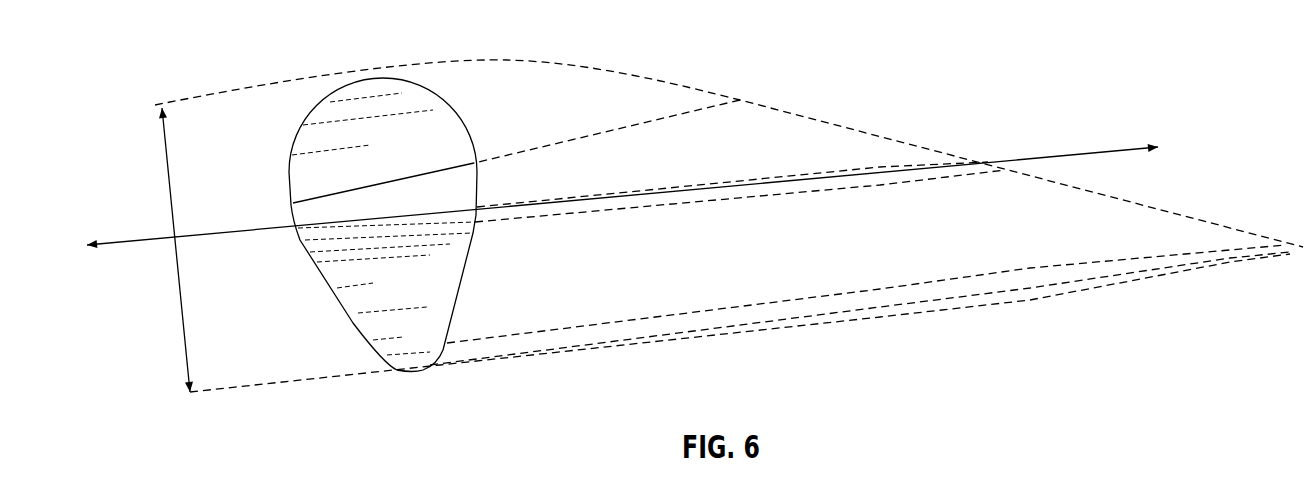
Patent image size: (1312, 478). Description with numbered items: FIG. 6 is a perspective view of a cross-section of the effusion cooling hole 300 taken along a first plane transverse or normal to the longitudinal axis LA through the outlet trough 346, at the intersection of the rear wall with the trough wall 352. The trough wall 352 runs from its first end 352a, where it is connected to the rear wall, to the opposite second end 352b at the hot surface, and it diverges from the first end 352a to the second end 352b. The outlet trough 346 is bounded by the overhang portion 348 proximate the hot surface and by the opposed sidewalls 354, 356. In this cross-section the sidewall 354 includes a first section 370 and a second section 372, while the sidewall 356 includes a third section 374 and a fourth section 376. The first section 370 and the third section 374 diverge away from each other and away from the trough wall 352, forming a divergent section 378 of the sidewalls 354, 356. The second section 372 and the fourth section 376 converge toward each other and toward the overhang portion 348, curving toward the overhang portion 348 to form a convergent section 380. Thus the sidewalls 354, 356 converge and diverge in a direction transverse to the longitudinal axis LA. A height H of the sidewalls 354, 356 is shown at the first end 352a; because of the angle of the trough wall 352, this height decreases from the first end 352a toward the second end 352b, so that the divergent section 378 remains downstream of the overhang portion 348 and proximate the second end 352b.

The effusion cooling hole 300 is at (750, 36).
The outlet trough 346 is at (548, 48).
The overhang portion 348 is at (477, 80).
The trough wall 352 is at (1064, 333).
The first end 352a is at (420, 371).
The second end 352b is at (1293, 248).
The sidewall 354 is at (968, 153).
The sidewall 356 is at (264, 277).
The first section 370 is at (513, 293).
The second section 372 is at (465, 135).
The third section 374 is at (353, 325).
The fourth section 376 is at (290, 157).
The divergent section 378 is at (353, 362).
The convergent section 380 is at (283, 79).
The height H is at (177, 248).
The longitudinal axis LA is at (1103, 148).